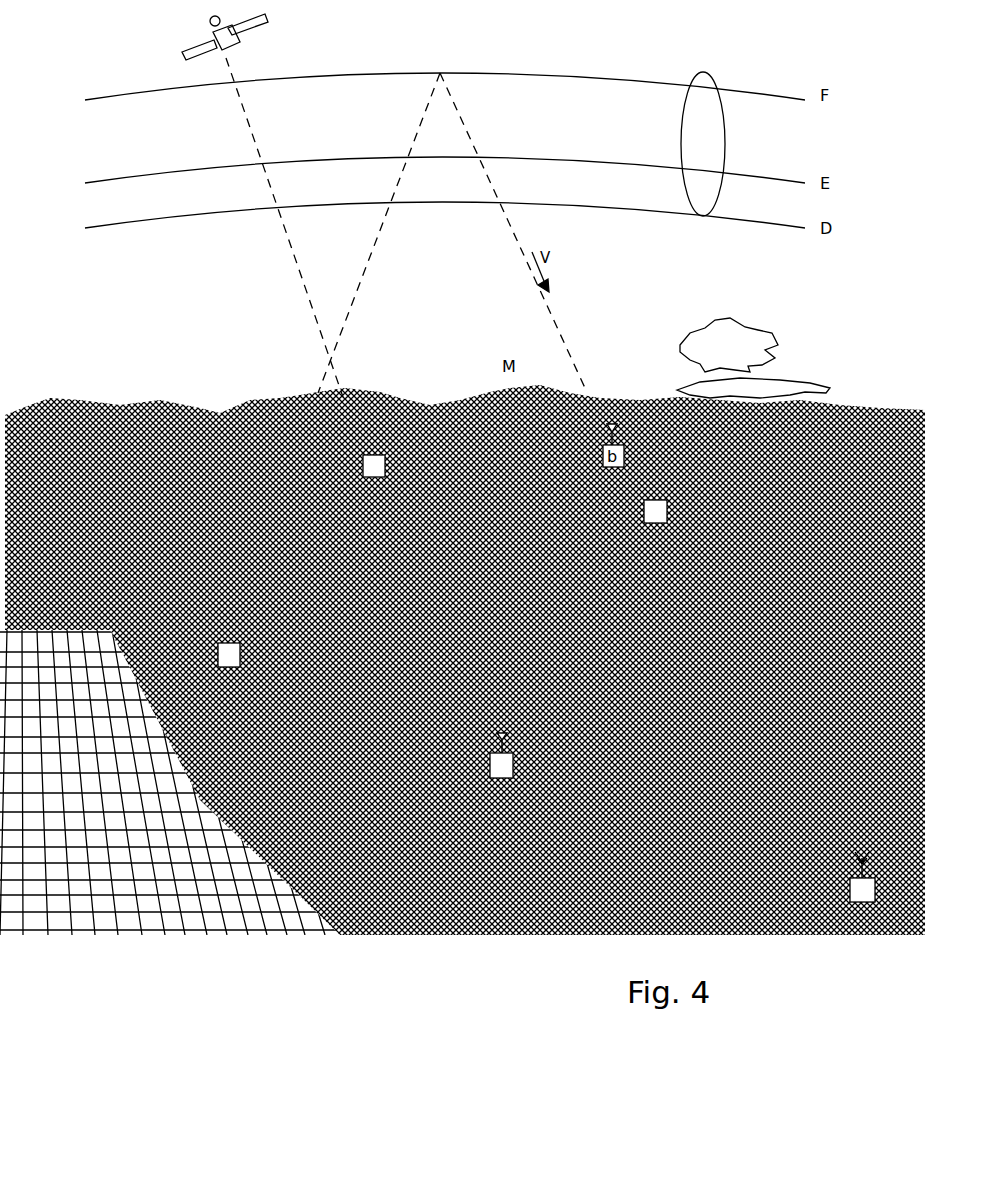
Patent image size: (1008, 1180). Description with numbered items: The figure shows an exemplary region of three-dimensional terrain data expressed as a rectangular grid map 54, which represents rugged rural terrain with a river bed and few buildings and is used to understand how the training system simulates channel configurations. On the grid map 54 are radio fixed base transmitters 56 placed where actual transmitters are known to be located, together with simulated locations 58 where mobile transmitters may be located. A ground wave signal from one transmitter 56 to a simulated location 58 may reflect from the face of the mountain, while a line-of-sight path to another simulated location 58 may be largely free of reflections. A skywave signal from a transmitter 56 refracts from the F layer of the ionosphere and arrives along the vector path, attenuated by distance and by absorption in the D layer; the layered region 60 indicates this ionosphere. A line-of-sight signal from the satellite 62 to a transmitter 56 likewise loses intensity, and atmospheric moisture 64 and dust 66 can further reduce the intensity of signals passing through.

The grid map 54 is at (108, 380).
The radio fixed base transmitters 56 is at (226, 632).
The simulated locations 58 is at (657, 478).
The atmospheric layer region 60 is at (720, 90).
The satellite 62 is at (212, 32).
The atmospheric moisture 64 is at (745, 333).
The dust 66 is at (800, 382).